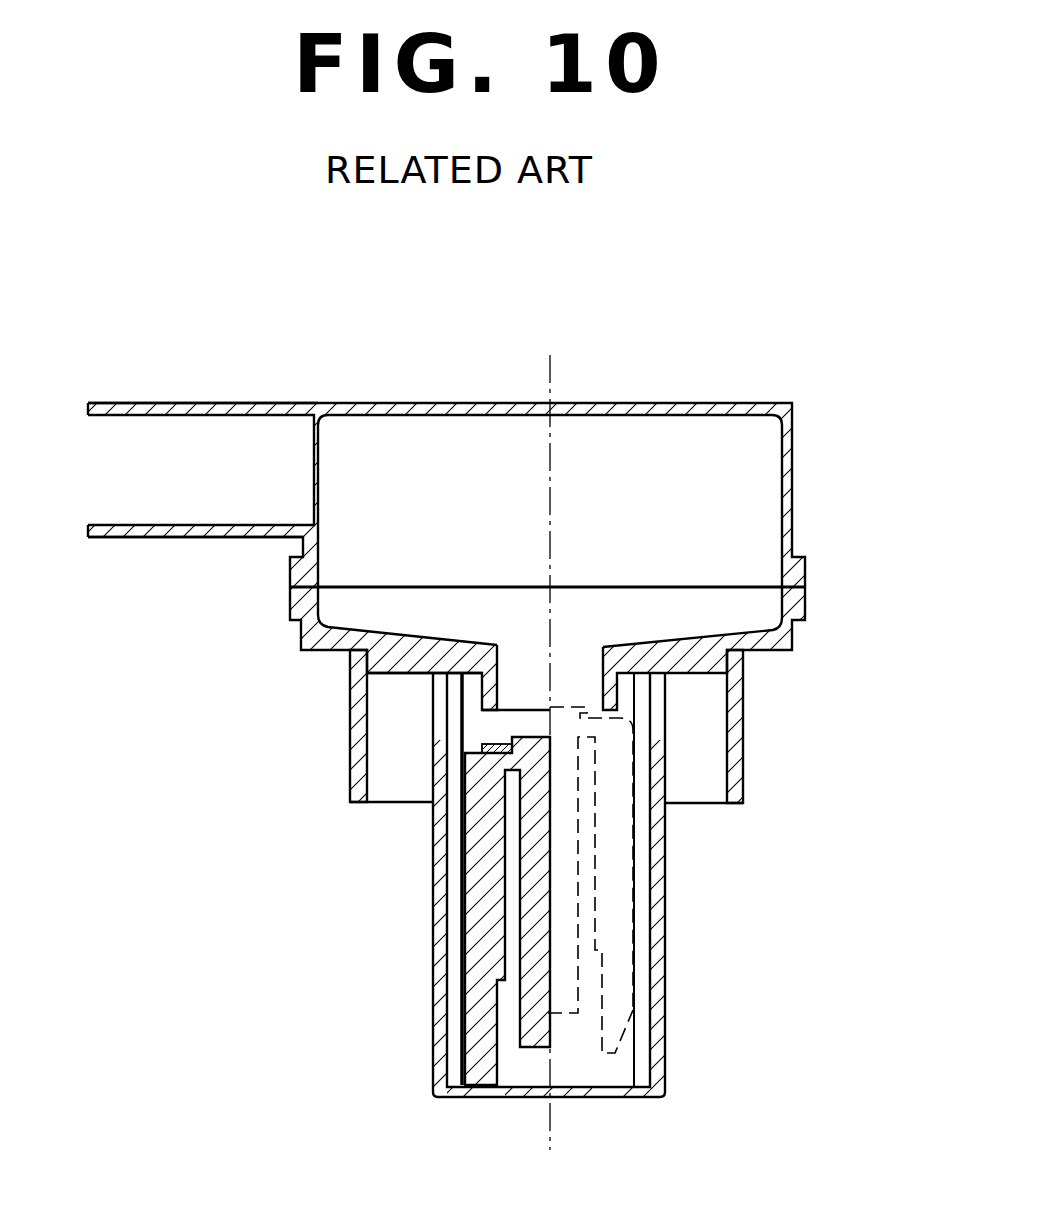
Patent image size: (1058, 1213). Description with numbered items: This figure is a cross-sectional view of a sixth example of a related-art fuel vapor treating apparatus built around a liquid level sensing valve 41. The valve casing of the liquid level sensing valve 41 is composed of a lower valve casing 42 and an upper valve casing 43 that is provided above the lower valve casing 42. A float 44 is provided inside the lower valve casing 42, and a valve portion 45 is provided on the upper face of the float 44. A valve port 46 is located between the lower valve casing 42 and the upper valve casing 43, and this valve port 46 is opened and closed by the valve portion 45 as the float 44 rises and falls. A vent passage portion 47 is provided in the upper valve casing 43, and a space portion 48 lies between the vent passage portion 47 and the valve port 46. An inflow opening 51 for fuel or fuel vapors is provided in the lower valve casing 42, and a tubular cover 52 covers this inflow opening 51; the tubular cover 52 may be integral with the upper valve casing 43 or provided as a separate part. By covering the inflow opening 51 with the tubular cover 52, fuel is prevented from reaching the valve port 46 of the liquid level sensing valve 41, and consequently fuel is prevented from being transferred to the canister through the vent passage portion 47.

The liquid level sensing valve 41 is at (678, 971).
The lower valve casing 42 is at (442, 967).
The upper valve casing 43 is at (790, 488).
The float 44 is at (480, 1010).
The valve portion 45 is at (497, 747).
The valve port 46 is at (485, 692).
The vent passage portion 47 is at (140, 530).
The space portion 48 is at (455, 516).
The inflow opening 51 is at (437, 728).
The tubular cover 52 is at (357, 748).